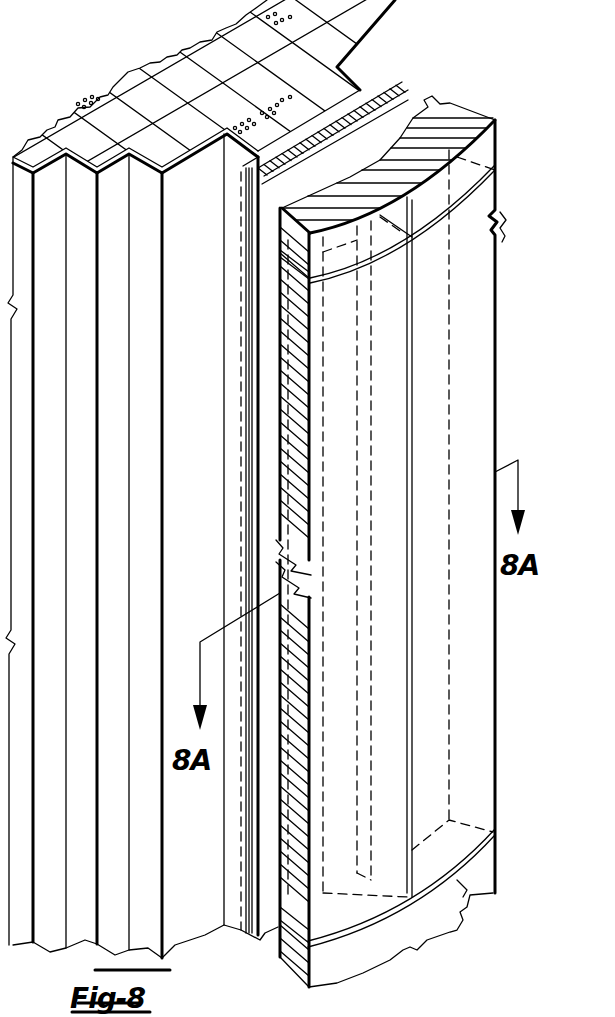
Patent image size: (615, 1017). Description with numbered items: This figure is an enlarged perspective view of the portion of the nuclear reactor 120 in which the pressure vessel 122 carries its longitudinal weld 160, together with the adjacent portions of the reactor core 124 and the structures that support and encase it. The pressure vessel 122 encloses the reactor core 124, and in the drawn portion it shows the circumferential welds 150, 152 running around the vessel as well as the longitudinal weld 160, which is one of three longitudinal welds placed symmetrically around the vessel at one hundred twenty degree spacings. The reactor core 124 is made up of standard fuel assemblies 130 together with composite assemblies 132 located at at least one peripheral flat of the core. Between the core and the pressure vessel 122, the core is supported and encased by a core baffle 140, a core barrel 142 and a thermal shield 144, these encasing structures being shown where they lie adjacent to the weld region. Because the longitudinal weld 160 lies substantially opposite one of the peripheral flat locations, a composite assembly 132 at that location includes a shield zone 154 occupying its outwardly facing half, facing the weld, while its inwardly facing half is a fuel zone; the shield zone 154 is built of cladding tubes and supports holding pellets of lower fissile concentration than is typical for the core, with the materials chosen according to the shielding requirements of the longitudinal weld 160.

The nuclear reactor 120 is at (462, 931).
The pressure vessel 122 is at (450, 104).
The reactor core 124 is at (150, 55).
The standard fuel assemblies 130 is at (120, 130).
The composite assemblies 132 is at (312, 82).
The outer membrane layer 140 is at (395, 32).
The core baffle 142 is at (390, 55).
The thermal shield 144 is at (395, 95).
The circumferential weld 150 is at (401, 888).
The circumferential weld 152 is at (549, 232).
The shield zone 154 is at (263, 163).
The longitudinal weld 160 is at (408, 775).